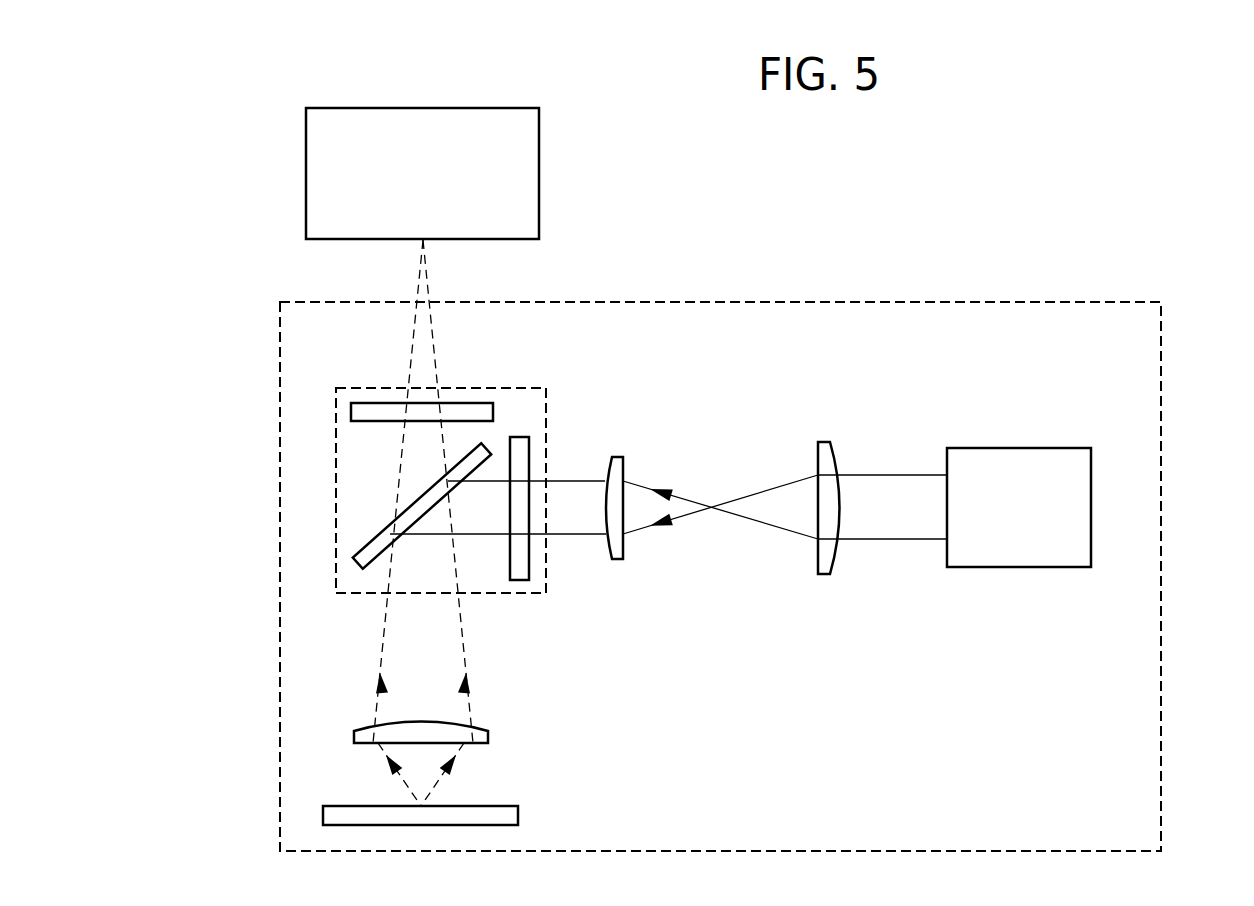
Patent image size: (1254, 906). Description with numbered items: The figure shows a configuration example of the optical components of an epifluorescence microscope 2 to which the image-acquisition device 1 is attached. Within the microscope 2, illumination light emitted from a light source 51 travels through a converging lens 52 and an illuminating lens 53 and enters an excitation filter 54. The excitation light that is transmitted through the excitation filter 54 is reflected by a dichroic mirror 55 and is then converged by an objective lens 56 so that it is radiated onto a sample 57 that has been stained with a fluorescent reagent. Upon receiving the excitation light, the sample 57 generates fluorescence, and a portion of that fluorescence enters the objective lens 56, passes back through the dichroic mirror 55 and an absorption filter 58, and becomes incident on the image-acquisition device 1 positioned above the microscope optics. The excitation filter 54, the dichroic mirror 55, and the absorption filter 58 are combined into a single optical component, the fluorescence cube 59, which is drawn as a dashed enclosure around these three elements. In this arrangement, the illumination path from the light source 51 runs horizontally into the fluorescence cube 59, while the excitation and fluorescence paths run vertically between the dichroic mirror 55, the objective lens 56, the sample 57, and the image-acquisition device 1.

The image-acquisition device 1 is at (540, 190).
The microscope 2 is at (1161, 456).
The light source 51 is at (1029, 448).
The converging lens 52 is at (821, 575).
The illuminating lens 53 is at (616, 560).
The excitation filter 54 is at (529, 441).
The dichroic mirror 55 is at (353, 562).
The objective lens 56 is at (354, 739).
The sample 57 is at (323, 816).
The absorption filter 58 is at (351, 412).
The fluorescence cube 59 is at (336, 478).